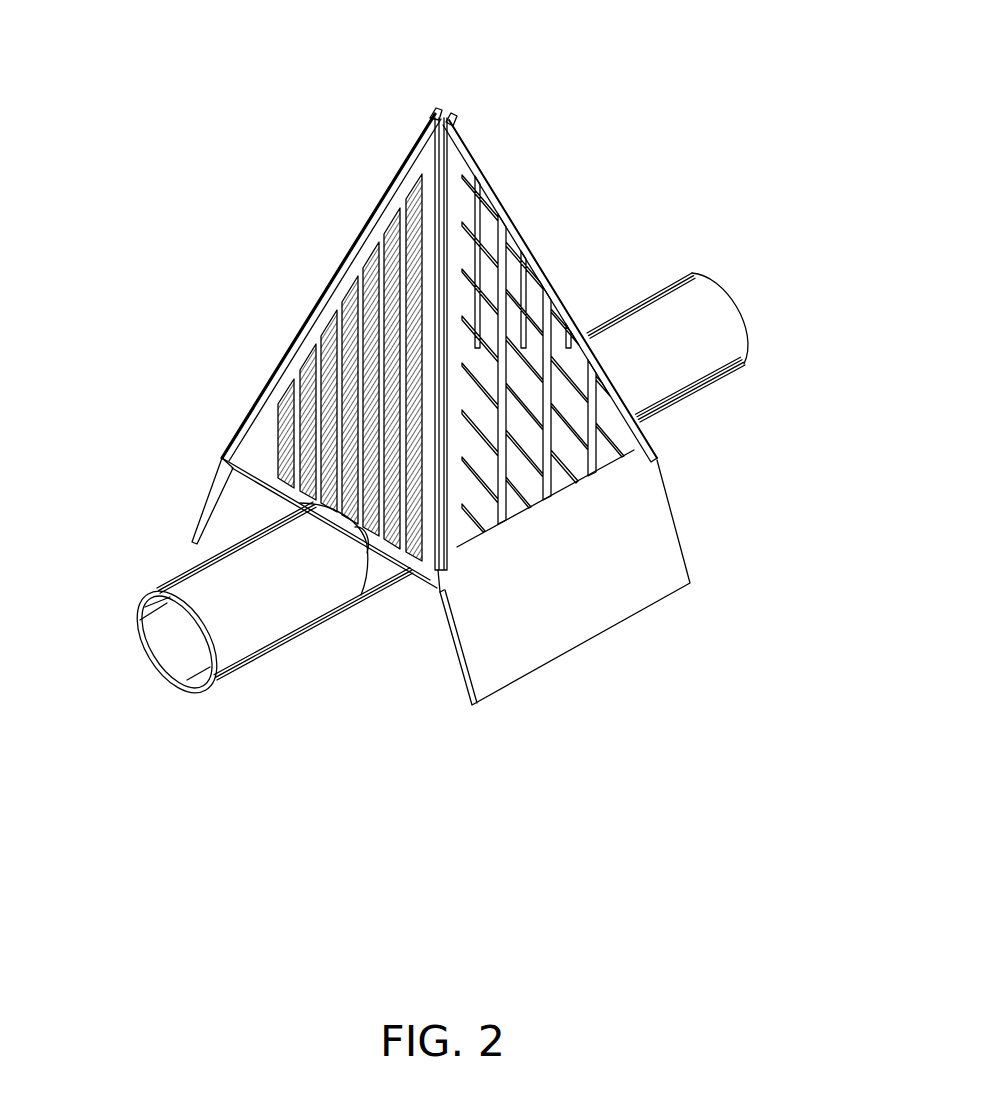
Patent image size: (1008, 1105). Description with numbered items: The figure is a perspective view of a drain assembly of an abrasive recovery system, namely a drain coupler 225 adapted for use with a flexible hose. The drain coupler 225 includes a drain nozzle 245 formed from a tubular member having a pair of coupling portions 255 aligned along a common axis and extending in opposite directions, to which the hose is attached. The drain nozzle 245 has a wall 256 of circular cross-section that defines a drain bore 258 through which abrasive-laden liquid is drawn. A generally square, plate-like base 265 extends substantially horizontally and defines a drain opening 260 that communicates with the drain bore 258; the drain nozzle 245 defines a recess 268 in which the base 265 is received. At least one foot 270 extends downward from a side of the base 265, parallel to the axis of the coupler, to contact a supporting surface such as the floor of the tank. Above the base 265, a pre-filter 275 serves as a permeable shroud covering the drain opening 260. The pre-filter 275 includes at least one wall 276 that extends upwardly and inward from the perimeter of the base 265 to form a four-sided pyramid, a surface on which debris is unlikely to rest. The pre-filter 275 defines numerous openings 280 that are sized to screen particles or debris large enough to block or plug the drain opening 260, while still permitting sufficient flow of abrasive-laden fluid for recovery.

The drain coupler 225 is at (310, 112).
The drain nozzle 245 is at (210, 590).
The coupling portion 255 is at (393, 487).
The wall 256 is at (138, 640).
The drain bore 258 is at (180, 665).
The drain opening 260 is at (522, 513).
The base 265 is at (415, 526).
The recess 268 is at (366, 545).
The foot 270 is at (200, 505).
The pre-filter 275 is at (550, 293).
The wall 276 is at (318, 332).
The opening 280 is at (483, 222).